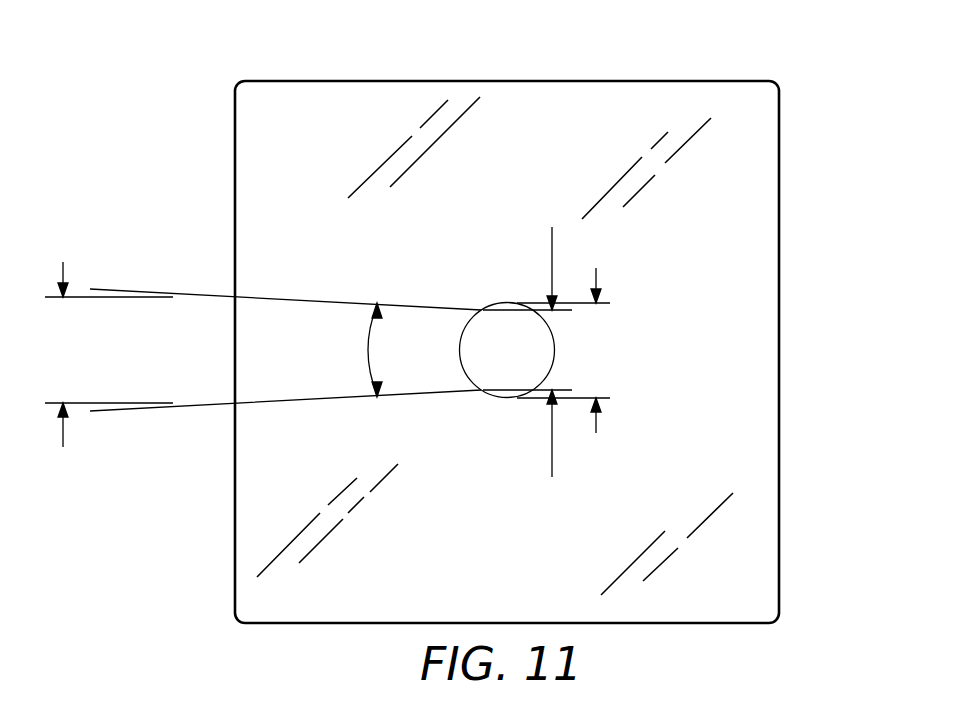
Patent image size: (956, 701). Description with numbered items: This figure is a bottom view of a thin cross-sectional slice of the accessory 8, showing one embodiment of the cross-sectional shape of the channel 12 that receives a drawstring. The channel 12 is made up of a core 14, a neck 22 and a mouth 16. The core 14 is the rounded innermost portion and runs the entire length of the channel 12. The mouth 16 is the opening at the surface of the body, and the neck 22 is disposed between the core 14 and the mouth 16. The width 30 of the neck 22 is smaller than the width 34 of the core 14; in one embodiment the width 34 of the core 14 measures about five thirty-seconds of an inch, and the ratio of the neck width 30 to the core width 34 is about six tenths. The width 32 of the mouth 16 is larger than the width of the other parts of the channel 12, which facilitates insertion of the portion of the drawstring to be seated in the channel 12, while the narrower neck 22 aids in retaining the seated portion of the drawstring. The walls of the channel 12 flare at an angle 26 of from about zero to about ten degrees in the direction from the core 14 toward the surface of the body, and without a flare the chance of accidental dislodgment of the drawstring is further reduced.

The body 8 is at (779, 358).
The channel 12 is at (299, 385).
The core 14 is at (553, 341).
The mouth 16 is at (250, 343).
The neck 22 is at (478, 309).
The angle 26 is at (368, 338).
The width of the neck 30 is at (564, 507).
The width of the mouth 32 is at (78, 477).
The width of the core 34 is at (613, 470).